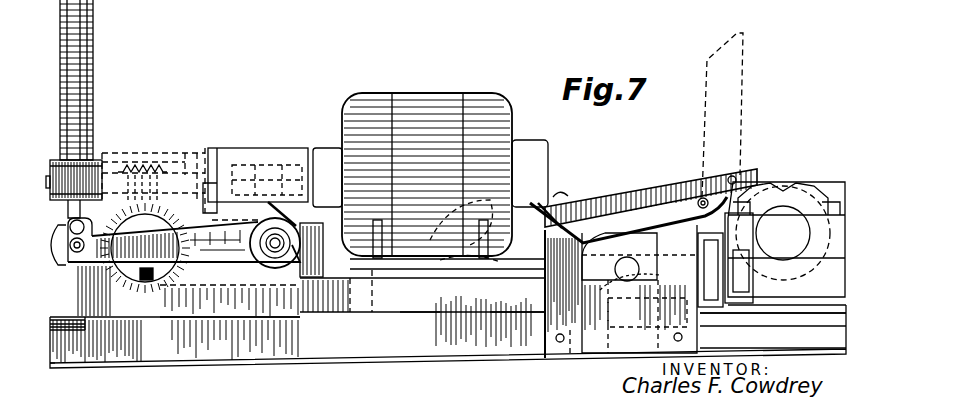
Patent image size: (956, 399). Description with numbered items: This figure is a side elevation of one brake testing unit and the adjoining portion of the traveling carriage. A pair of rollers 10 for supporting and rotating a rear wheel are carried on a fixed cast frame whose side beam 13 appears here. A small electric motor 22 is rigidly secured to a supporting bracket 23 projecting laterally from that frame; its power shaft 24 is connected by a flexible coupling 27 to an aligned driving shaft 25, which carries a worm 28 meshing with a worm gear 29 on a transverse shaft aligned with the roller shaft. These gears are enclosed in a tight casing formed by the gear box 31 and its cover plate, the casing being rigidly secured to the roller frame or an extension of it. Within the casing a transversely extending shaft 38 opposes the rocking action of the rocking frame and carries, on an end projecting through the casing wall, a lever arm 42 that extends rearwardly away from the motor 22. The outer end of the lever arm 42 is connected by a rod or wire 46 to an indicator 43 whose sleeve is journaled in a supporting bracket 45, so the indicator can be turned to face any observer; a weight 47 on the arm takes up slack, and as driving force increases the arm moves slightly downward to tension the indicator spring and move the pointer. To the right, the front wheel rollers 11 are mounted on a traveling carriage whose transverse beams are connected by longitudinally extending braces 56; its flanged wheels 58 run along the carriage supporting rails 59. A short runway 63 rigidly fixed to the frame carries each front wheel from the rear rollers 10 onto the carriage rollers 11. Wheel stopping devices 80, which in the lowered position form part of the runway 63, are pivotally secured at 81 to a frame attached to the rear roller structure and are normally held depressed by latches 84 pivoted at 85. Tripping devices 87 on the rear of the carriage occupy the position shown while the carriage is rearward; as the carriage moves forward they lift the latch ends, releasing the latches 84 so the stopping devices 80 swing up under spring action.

The rollers 10 is at (473, 193).
The rollers 11 is at (792, 182).
The side beam 13 is at (378, 353).
The electric motor 22 is at (463, 96).
The supporting bracket 23 is at (419, 273).
The power shaft 24 is at (304, 172).
The driving shaft 25 is at (194, 170).
The flexible coupling 27 is at (254, 165).
The worm 28 is at (141, 150).
The worm gear 29 is at (163, 317).
The gear box 31 is at (235, 308).
The shaft 38 is at (325, 250).
The lever arm 42 is at (134, 262).
The indicator 43 is at (93, 17).
The supporting bracket 45 is at (80, 177).
The rod or wire 46 is at (87, 230).
The weight 47 is at (62, 261).
The longitudinally extending braces 56 is at (825, 290).
The flanged wheels 58 is at (633, 187).
The carriage supporting rails 59 is at (800, 313).
The runway 63 is at (747, 170).
The wheel stopping devices 80 is at (743, 84).
The pivot 81 is at (700, 196).
The latches 84 is at (598, 163).
The pivot 85 is at (520, 318).
The tripping devices 87 is at (572, 358).